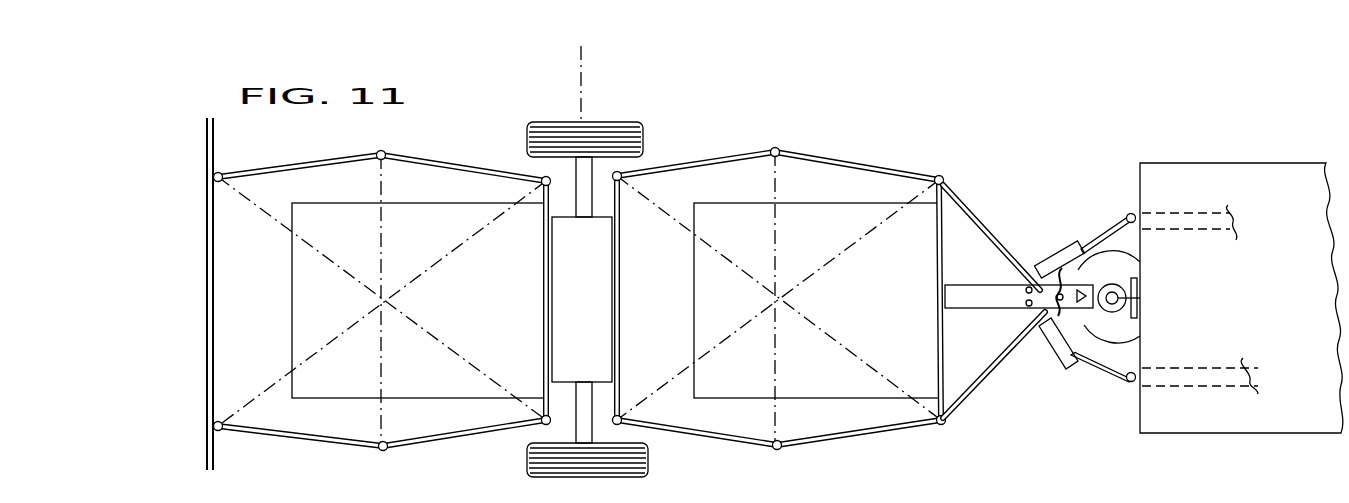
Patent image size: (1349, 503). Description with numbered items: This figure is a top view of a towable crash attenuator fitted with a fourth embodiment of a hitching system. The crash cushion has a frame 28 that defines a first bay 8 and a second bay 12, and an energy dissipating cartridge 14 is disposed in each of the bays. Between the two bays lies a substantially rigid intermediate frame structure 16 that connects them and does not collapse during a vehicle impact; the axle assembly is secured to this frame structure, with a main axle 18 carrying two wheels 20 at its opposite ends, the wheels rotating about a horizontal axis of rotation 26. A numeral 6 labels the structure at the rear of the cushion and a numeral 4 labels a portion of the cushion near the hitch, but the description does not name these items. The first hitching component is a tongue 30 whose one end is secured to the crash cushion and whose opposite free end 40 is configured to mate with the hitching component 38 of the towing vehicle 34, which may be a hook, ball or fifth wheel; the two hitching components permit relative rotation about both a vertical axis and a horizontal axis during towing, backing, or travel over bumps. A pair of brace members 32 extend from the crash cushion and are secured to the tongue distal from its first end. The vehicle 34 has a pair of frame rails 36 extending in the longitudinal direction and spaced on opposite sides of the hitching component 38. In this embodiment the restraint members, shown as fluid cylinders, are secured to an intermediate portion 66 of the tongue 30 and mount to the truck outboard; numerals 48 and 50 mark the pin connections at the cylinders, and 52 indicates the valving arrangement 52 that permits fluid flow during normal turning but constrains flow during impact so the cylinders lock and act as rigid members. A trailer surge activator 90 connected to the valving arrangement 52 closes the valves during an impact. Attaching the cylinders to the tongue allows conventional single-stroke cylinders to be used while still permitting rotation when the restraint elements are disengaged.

The trailer frame 4 is at (937, 318).
The wall 6 is at (207, 377).
The first bay 8 is at (577, 273).
The second bay 12 is at (779, 277).
The energy dissipating cartridge 14 is at (480, 315).
The intermediate frame structure 16 is at (593, 328).
The main axle 18 is at (537, 439).
The wheel 20 is at (640, 123).
The horizontal axis of rotation 26 is at (603, 56).
The frame 28 is at (746, 443).
The tongue 30 is at (984, 302).
The brace member 32 is at (980, 386).
The vehicle 34 is at (1303, 295).
The frame rail 36 is at (1180, 213).
The hitching component 38 is at (1140, 297).
The free end of the tongue 40 is at (1140, 340).
The upper strut 48 is at (1028, 288).
The pivot pin 50 is at (1126, 215).
The valving arrangement 52 is at (1066, 340).
The intermediate portion of the tongue 66 is at (1058, 268).
The trailer surge activator 90 is at (1139, 249).